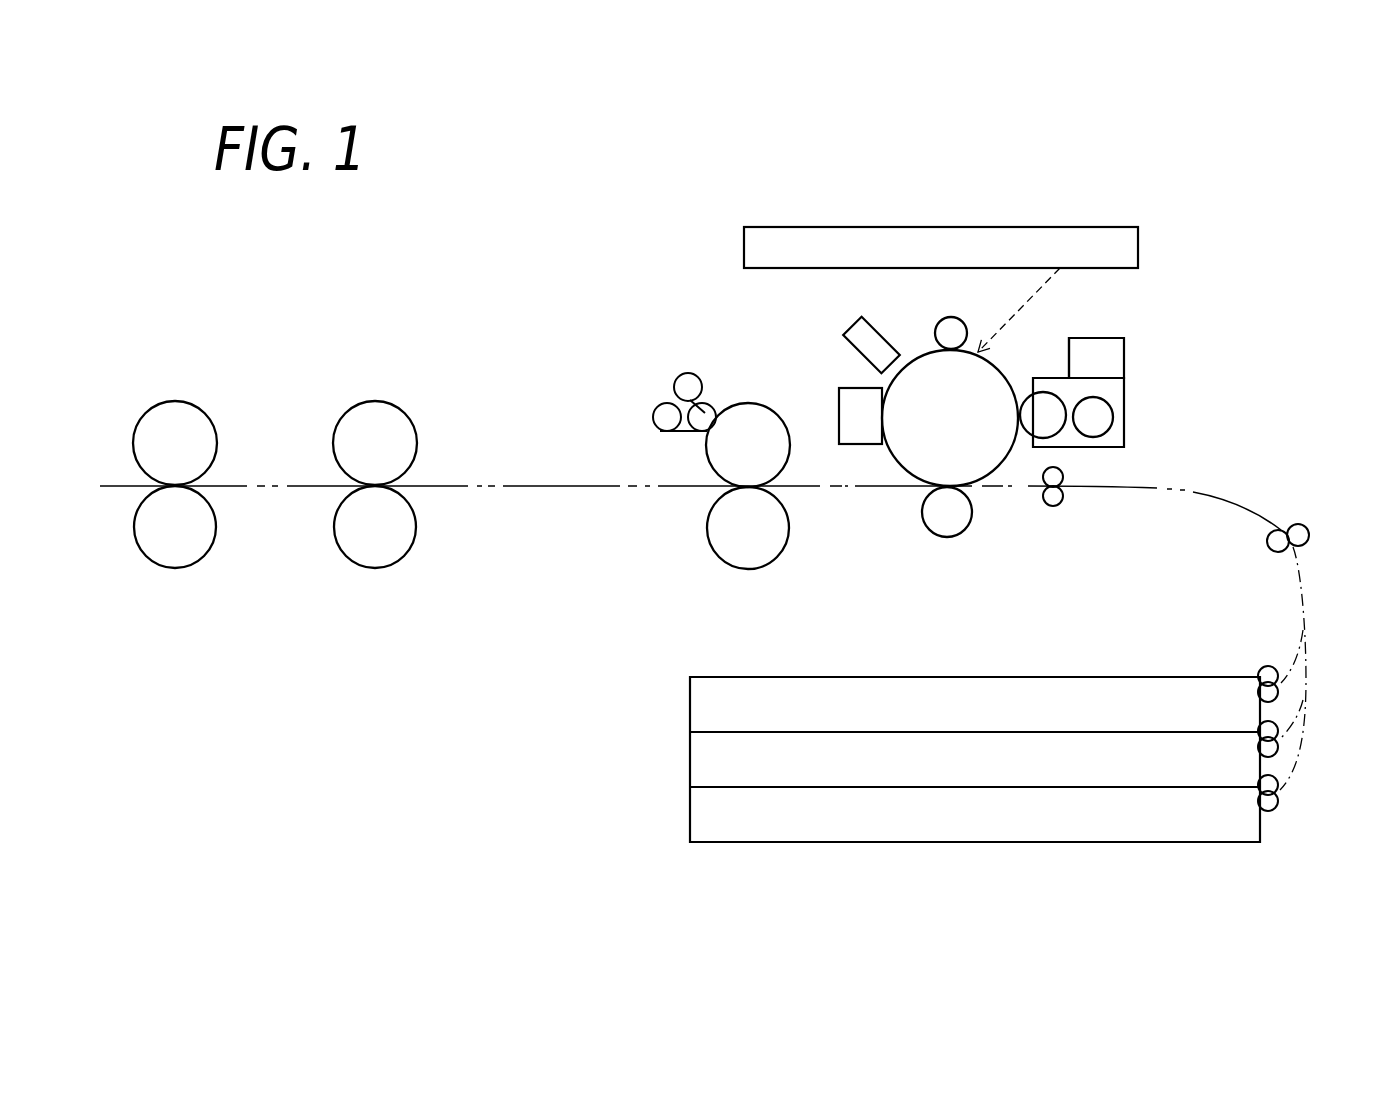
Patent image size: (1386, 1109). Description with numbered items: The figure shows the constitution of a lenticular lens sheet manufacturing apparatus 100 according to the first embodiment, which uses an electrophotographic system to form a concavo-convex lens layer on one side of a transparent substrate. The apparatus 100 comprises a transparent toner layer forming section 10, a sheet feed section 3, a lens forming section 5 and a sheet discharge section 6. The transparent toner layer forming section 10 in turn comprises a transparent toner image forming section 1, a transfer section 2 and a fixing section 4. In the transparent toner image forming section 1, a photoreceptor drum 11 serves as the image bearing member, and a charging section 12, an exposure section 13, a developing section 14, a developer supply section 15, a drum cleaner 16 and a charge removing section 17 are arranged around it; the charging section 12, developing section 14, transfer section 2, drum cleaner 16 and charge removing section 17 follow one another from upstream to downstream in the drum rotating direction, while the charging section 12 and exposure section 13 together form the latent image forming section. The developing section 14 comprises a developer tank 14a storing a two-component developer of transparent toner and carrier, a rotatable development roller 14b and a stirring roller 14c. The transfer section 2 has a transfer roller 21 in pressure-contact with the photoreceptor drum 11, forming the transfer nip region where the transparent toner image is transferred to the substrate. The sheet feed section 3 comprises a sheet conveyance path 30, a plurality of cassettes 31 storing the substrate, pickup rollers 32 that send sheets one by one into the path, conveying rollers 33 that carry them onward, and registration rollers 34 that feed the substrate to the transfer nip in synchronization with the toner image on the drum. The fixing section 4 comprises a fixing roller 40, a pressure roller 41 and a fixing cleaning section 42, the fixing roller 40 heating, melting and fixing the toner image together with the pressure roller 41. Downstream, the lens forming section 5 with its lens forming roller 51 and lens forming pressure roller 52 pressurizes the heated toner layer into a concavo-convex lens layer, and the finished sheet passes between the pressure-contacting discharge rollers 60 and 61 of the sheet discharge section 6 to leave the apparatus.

The lenticular lens sheet manufacturing apparatus 100 is at (1163, 183).
The transparent toner image forming section 1 is at (1188, 285).
The transparent toner layer forming section 10 is at (648, 308).
The photoreceptor drum 11 is at (927, 353).
The charging section 12 is at (948, 325).
The exposure section 13 is at (985, 233).
The developing section 14 is at (1200, 395).
The developer tank 14a is at (1117, 358).
The development roller 14b is at (1044, 398).
The stirring roller 14c is at (1100, 417).
The developer supply section 15 is at (1090, 347).
The drum cleaner 16 is at (850, 407).
The charge removing section 17 is at (858, 332).
The transfer section 2 is at (997, 538).
The transfer roller 21 is at (947, 525).
The sheet feed section 3 is at (1317, 655).
The sheet conveyance path 30 is at (1300, 563).
The cassettes 31 is at (705, 703).
The pickup rollers 32 is at (1268, 667).
The conveying rollers 33 is at (1270, 548).
The registration rollers 34 is at (1053, 498).
The fixing section 4 is at (692, 553).
The fixing roller 40 is at (752, 417).
The pressure roller 41 is at (768, 550).
The fixing cleaning section 42 is at (655, 386).
The lens forming section 5 is at (395, 390).
The lens forming roller 51 is at (406, 433).
The lens forming pressure roller 52 is at (390, 550).
The sheet discharge section 6 is at (190, 390).
The discharge roller 60 is at (202, 433).
The discharge roller 61 is at (187, 550).